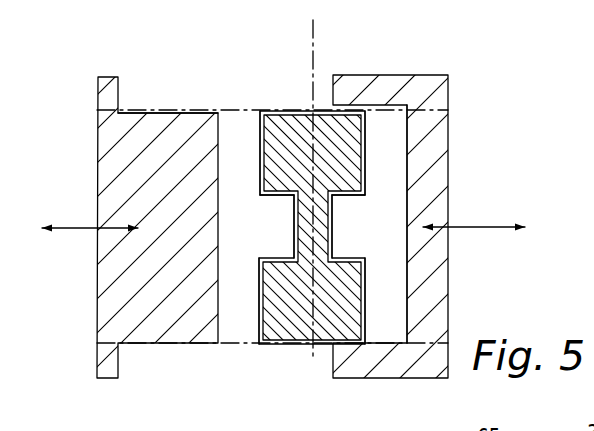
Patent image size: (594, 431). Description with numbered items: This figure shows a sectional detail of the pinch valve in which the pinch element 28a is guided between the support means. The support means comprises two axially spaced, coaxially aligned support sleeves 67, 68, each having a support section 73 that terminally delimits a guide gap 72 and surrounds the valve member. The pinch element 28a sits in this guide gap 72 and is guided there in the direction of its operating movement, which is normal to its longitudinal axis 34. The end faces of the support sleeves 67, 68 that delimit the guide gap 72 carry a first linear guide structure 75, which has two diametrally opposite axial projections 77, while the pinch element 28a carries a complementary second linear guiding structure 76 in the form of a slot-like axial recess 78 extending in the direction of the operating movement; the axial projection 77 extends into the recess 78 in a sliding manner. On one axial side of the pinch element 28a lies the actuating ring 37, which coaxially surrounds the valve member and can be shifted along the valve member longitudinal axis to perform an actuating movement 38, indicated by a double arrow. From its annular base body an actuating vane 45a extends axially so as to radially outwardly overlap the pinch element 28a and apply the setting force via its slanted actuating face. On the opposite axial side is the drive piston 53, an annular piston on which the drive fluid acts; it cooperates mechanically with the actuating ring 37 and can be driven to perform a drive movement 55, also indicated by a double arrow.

The longitudinal axis 34 is at (318, 32).
The actuating ring 37 is at (104, 124).
The actuating movement 38 is at (83, 232).
The actuating vane 45a is at (232, 111).
The drive piston 53 is at (444, 89).
The drive movement 55 is at (473, 227).
The pinch element 28a is at (348, 128).
The guide gap 72 is at (272, 156).
The first linear guide structure 75 is at (353, 147).
The second linear guiding structure 76 is at (254, 172).
The axial projection 77 is at (278, 240).
The axial recess 78 is at (293, 220).
The support sleeve 67 is at (241, 312).
The support sleeve 68 is at (393, 287).
The support section 73 is at (381, 343).